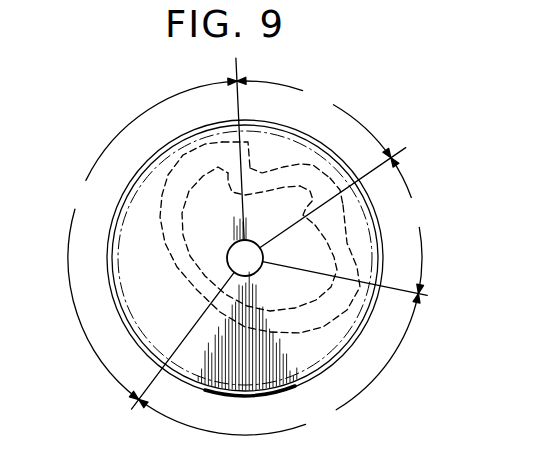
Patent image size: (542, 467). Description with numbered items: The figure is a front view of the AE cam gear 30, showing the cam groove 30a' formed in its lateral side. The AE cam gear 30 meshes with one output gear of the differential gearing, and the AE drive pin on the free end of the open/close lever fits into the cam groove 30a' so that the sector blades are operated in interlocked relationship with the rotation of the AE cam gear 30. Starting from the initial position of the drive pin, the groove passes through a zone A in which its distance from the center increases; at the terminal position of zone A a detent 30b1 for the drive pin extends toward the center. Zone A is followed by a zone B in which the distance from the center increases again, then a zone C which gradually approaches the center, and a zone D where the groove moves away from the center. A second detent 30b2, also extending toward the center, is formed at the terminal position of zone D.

The AE cam gear 30 is at (352, 347).
The cam groove 30a' is at (314, 252).
The detent 30b1 is at (330, 211).
The detent 30b2 is at (248, 160).
The zone A is at (313, 122).
The zone B is at (403, 225).
The zone C is at (276, 359).
The zone D is at (157, 242).